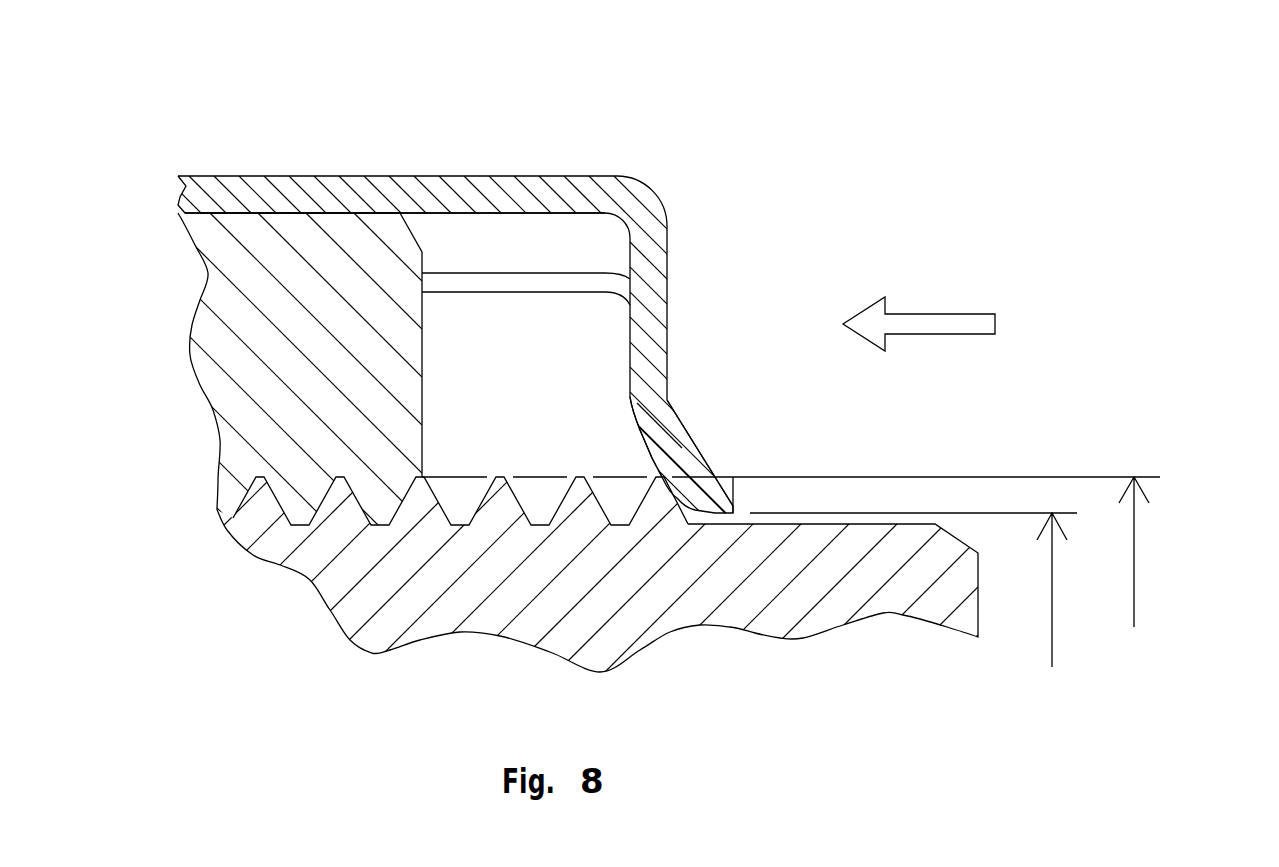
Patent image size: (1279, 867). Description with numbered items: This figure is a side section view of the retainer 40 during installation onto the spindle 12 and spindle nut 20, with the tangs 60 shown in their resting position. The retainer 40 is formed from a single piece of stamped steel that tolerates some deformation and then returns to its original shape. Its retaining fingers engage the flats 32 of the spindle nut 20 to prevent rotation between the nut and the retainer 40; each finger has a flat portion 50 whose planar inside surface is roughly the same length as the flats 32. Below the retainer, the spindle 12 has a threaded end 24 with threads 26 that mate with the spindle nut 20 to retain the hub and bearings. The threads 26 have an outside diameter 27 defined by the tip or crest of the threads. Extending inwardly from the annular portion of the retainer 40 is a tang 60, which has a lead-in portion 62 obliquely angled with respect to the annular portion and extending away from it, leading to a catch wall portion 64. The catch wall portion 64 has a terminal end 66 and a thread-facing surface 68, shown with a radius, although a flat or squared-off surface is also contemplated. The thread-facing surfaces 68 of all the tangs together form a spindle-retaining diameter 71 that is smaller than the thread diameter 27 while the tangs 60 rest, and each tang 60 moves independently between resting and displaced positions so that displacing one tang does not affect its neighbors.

The spindle 12 is at (330, 593).
The spindle nut 20 is at (186, 313).
The threaded end 24 is at (547, 453).
The threads 26 is at (500, 475).
The outside diameter 27 is at (1134, 572).
The flats 32 is at (284, 212).
The retainer 40 is at (588, 133).
The flat portion 50 is at (408, 185).
The tang 60 is at (680, 417).
The lead-in portion 62 is at (668, 443).
The catch wall portion 64 is at (722, 492).
The terminal end 66 is at (745, 502).
The thread-facing surface 68 is at (660, 440).
The spindle-retaining diameter 71 is at (1052, 648).